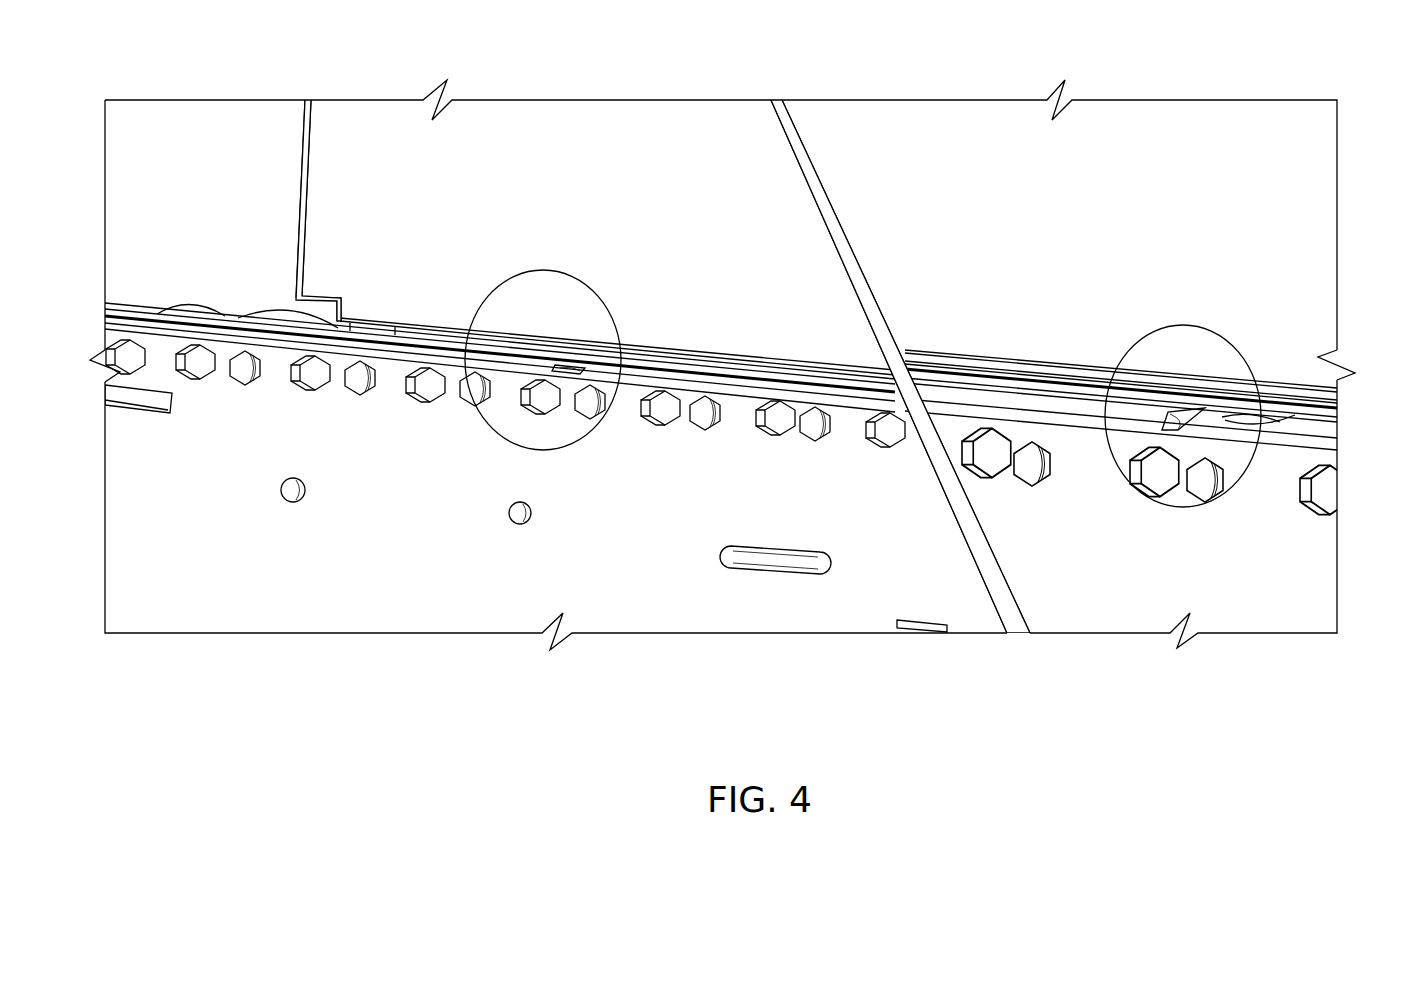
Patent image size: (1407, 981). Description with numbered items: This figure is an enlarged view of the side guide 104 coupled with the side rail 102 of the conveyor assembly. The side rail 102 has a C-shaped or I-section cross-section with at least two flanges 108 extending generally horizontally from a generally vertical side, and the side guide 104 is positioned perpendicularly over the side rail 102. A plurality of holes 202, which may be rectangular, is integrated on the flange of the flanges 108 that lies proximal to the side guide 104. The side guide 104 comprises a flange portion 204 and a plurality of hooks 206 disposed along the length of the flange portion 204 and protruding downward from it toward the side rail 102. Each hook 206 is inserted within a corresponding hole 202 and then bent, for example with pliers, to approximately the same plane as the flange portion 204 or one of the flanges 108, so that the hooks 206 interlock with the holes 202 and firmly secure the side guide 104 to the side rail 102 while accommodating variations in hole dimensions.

The side rail 102 is at (218, 623).
The side guide 104 is at (558, 108).
The flanges 108 is at (508, 440).
The holes 202 is at (1165, 492).
The flange portion 204 is at (707, 360).
The hooks 206 is at (574, 440).